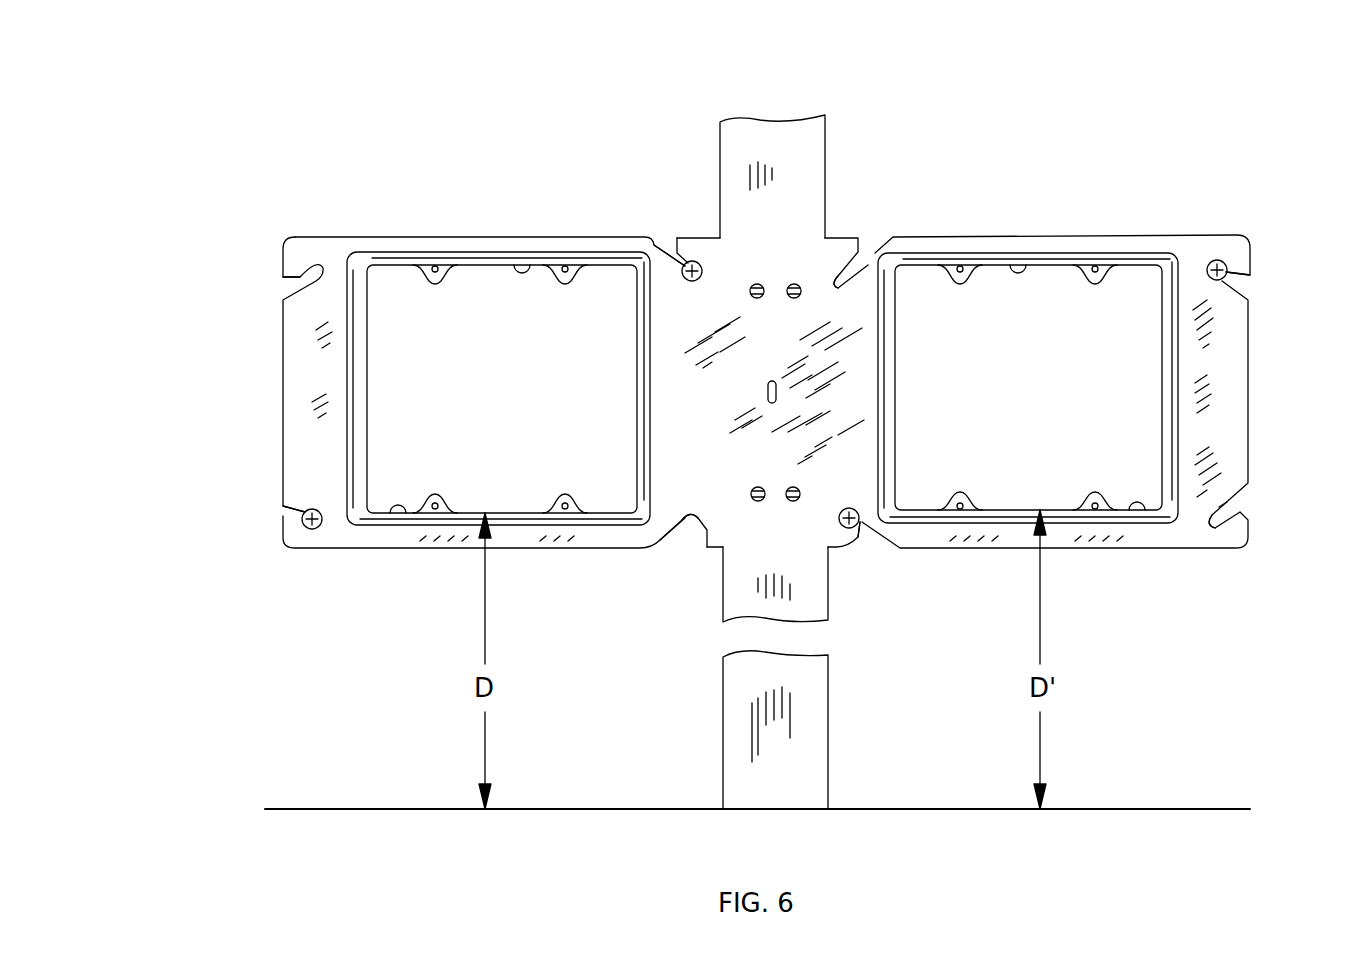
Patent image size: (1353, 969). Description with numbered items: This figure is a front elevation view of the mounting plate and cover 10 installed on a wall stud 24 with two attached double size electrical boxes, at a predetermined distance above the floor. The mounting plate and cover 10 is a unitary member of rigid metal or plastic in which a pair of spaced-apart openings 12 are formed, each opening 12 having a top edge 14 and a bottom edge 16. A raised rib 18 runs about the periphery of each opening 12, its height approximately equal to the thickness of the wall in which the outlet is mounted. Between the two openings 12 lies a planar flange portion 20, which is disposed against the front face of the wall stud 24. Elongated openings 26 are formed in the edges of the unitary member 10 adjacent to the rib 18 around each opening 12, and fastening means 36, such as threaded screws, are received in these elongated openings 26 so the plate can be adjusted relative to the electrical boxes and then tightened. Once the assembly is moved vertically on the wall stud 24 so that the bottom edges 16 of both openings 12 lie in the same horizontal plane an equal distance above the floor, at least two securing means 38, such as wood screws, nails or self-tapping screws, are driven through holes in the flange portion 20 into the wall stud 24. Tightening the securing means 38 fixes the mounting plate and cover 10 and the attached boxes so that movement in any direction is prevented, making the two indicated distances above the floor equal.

The mounting plate and cover 10 is at (1268, 575).
The opening 12 is at (461, 332).
The top edge 14 is at (518, 263).
The bottom edge 16 is at (405, 513).
The raised rib 18 is at (387, 252).
The planar flange portion 20 is at (694, 474).
The wall stud 24 is at (777, 128).
The elongated opening 26 is at (290, 278).
The fastening means 36 is at (692, 259).
The securing means 38 is at (762, 284).